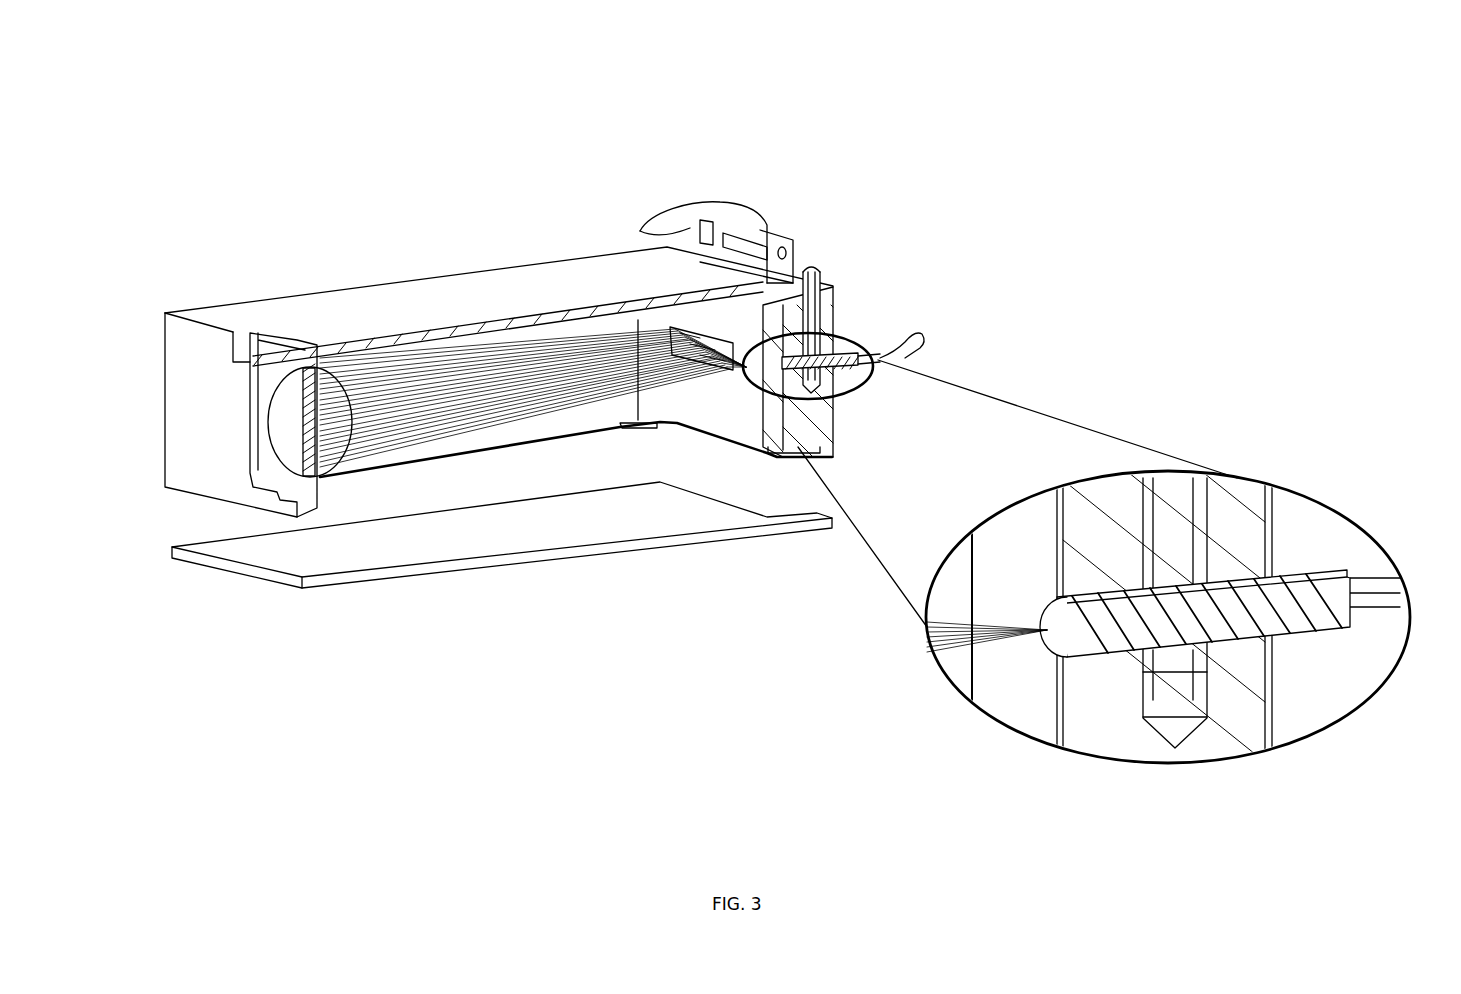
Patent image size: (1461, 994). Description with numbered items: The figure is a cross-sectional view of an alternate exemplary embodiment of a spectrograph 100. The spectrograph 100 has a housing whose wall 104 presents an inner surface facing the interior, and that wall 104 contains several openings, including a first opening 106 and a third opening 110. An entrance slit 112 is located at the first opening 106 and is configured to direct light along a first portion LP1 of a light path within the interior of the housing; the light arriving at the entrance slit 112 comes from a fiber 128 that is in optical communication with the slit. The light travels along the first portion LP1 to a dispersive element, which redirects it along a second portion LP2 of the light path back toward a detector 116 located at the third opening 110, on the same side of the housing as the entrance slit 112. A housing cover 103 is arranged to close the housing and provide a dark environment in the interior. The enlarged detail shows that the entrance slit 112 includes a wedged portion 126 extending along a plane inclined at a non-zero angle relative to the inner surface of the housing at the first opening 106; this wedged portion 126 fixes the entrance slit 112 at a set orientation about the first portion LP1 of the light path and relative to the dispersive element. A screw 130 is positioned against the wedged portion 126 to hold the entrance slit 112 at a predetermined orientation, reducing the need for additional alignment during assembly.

The spectrograph 100 is at (246, 124).
The housing cover 103 is at (275, 552).
The wall 104 is at (592, 422).
The first opening 106 is at (1060, 633).
The third opening 110 is at (680, 300).
The entrance slit 112 is at (1070, 597).
The detector 116 is at (787, 385).
The wedged portion 126 is at (1300, 568).
The fiber 128 is at (923, 342).
The screw 130 is at (813, 277).
The first portion of the light path LP1 is at (695, 385).
The second portion of the light path LP2 is at (512, 440).